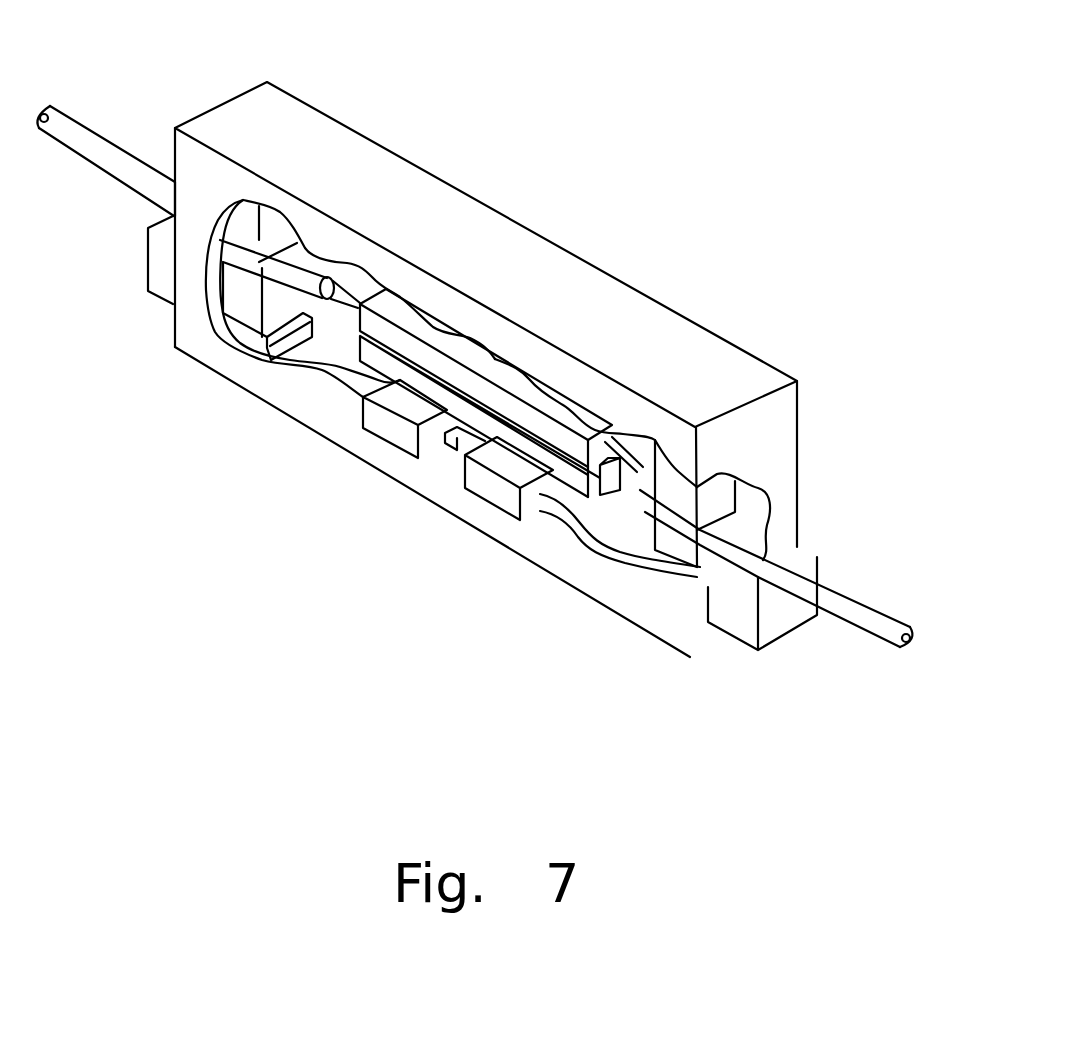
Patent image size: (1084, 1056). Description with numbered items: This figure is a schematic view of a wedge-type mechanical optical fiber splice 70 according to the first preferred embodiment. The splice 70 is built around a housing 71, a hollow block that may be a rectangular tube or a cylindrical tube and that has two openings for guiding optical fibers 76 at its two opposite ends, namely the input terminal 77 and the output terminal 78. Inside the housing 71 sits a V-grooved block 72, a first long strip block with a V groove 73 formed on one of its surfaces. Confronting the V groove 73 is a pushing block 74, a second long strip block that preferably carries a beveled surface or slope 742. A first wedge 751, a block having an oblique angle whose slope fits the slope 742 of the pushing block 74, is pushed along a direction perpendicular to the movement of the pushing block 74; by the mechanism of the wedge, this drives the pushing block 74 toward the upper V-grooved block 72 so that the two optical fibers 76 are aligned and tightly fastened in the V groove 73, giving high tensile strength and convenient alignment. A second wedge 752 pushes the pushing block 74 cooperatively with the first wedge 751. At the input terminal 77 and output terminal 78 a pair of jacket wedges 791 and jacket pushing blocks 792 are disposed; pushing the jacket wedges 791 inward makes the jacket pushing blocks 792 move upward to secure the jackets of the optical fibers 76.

The wedge-type mechanical optical fiber splice 70 is at (601, 138).
The housing 71 is at (387, 183).
The V-grooved block 72 is at (495, 359).
The V groove 73 is at (623, 434).
The pushing block 74 is at (578, 540).
The slope 742 is at (605, 483).
The first wedge 751 is at (487, 487).
The second wedge 752 is at (393, 427).
The optical fibers 76 is at (100, 155).
The input terminal 77 is at (797, 453).
The output terminal 78 is at (173, 163).
The jacket wedges 791 is at (162, 267).
The jacket pushing blocks 792 is at (250, 295).